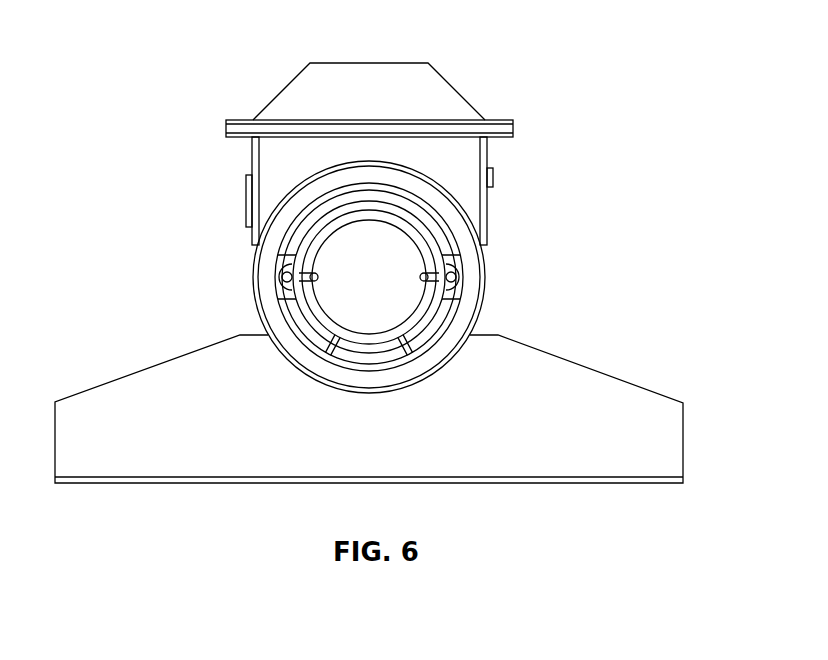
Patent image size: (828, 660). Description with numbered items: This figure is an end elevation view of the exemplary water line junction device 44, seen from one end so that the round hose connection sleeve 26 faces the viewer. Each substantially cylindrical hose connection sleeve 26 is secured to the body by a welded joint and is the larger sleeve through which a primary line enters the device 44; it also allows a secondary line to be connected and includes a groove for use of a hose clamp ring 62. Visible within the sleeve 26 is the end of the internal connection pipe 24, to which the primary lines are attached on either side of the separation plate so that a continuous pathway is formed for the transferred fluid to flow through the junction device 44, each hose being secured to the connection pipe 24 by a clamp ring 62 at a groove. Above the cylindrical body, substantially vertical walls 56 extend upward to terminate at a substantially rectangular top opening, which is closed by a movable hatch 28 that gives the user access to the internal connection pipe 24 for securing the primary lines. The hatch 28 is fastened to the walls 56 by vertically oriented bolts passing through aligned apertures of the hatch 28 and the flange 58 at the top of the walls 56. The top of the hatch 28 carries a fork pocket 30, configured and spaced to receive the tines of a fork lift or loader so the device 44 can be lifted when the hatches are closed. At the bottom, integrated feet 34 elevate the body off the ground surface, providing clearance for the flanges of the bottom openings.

The junction device 44 is at (249, 61).
The fork pocket 30 is at (403, 75).
The movable hatch 28 is at (498, 121).
The vertical walls 56 is at (275, 157).
The flange 58 is at (503, 138).
The hose connection sleeve 26 is at (463, 285).
The internal connection pipe 24 is at (312, 283).
The clamp ring 62 is at (292, 252).
The integrated feet 34 is at (663, 431).